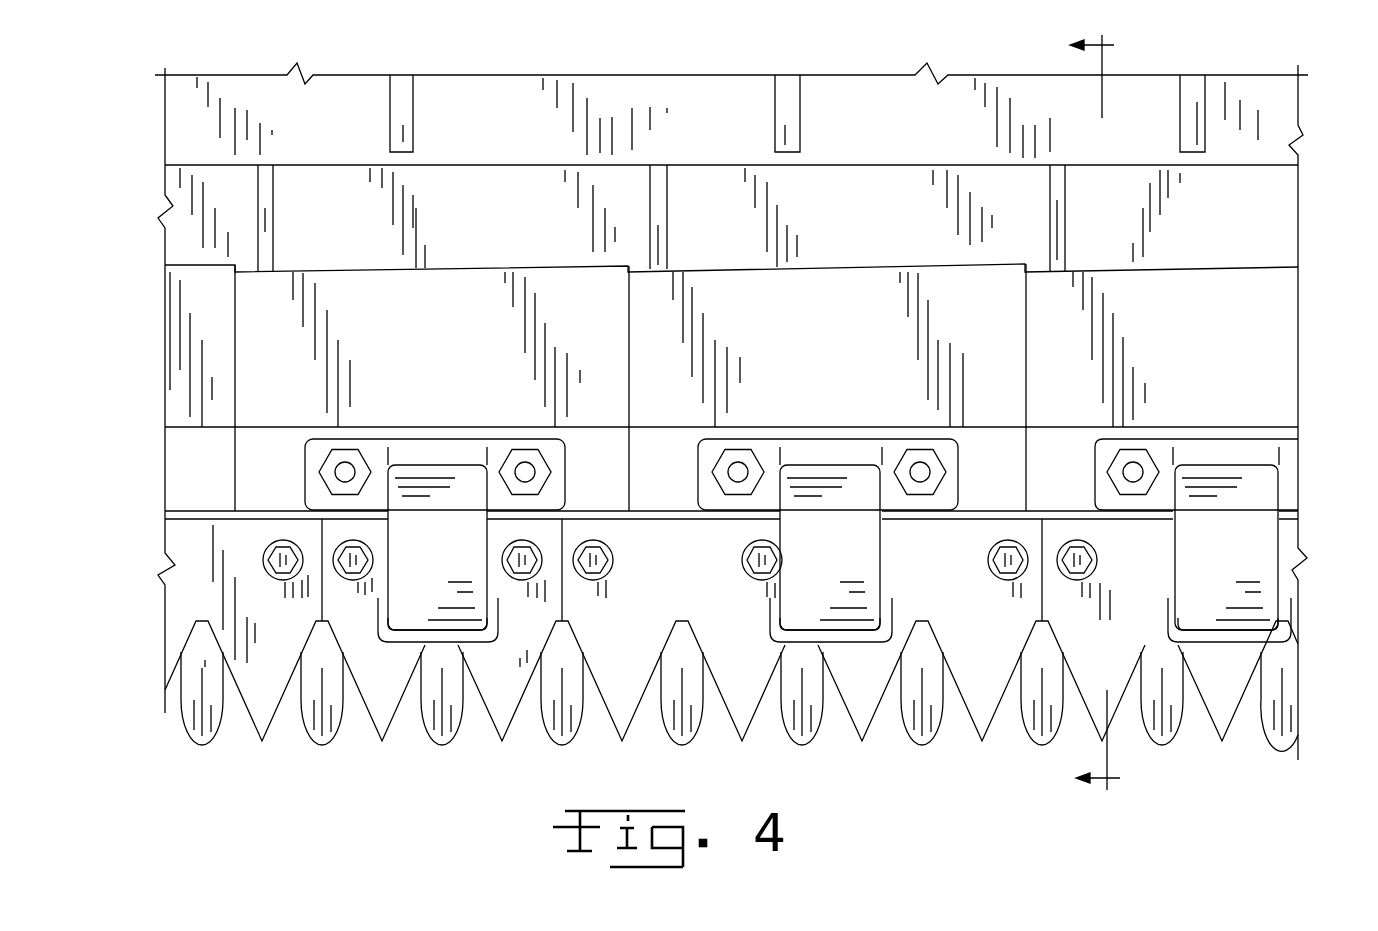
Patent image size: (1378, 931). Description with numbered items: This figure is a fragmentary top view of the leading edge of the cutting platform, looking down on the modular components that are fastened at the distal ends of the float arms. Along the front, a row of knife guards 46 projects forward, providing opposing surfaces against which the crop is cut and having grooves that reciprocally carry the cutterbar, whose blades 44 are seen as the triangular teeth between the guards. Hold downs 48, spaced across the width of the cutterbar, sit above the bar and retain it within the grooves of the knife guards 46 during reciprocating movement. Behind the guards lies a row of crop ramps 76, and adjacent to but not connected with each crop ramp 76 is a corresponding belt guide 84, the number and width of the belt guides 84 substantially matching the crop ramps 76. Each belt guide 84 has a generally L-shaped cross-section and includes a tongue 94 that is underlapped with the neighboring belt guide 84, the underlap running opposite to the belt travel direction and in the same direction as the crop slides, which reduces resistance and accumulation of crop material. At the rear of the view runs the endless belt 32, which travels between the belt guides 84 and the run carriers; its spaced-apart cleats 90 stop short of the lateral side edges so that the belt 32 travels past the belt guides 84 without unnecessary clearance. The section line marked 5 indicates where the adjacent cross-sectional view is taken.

The endless belt 32 is at (603, 97).
The cleat 90 is at (403, 116).
The belt guide 84 is at (438, 239).
The tongue 94 is at (270, 228).
The crop ramp 76 is at (408, 374).
The hold down 48 is at (420, 602).
The blade 44 is at (497, 703).
The knife guard 46 is at (310, 727).
The section line 5- 5 is at (1083, 412).